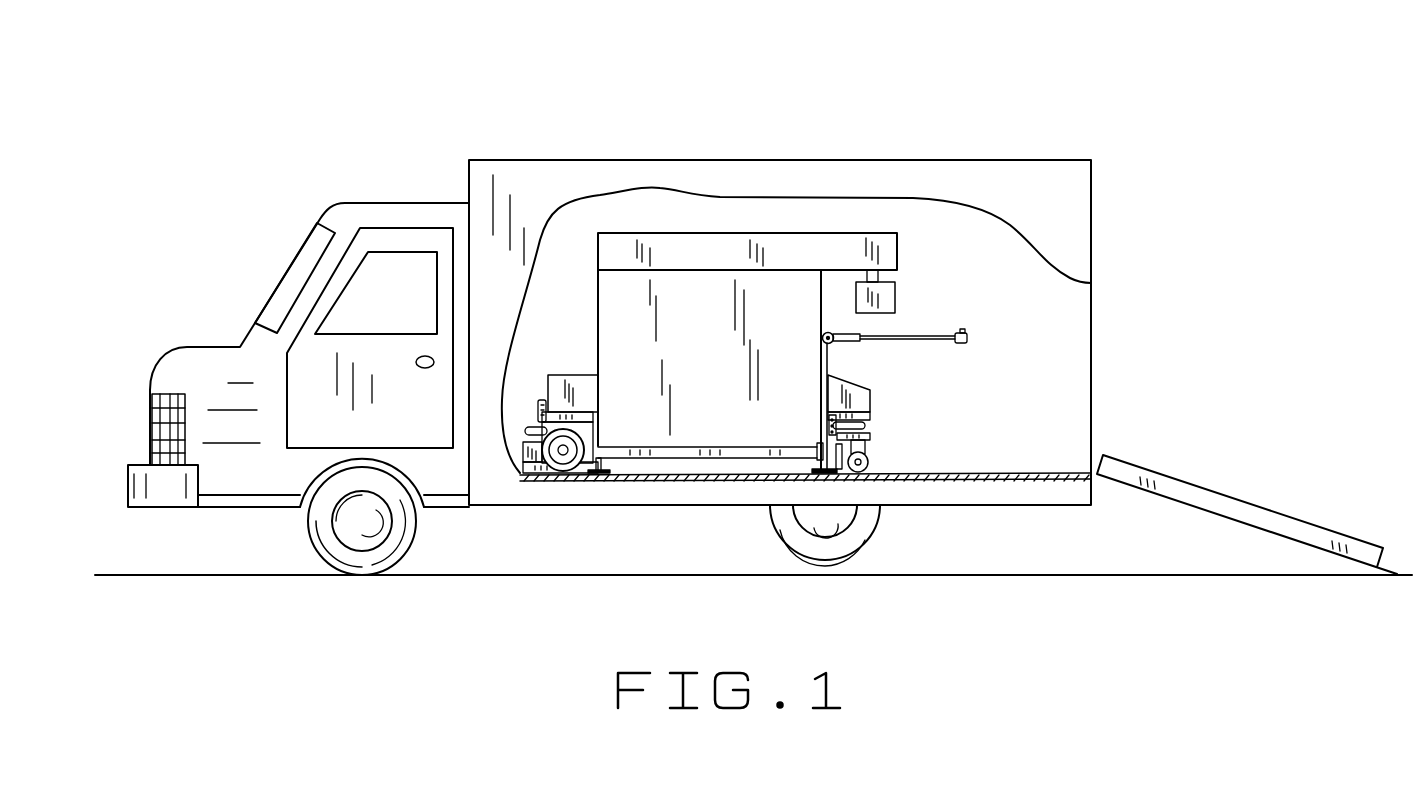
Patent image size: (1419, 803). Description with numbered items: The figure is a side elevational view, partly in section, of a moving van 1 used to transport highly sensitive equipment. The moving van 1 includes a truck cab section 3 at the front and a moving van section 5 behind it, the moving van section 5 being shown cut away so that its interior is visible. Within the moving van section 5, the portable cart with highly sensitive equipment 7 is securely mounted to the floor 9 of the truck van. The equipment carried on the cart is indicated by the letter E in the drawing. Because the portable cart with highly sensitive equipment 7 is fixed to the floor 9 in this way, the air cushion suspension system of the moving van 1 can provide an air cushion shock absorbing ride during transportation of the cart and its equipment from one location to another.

The moving van 1 is at (753, 337).
The truck cab section 3 is at (393, 203).
The moving van section 5 is at (1038, 204).
The equipment enclosure E is at (720, 333).
The portable cart with highly sensitive equipment 7 is at (885, 372).
The floor 9 is at (967, 483).